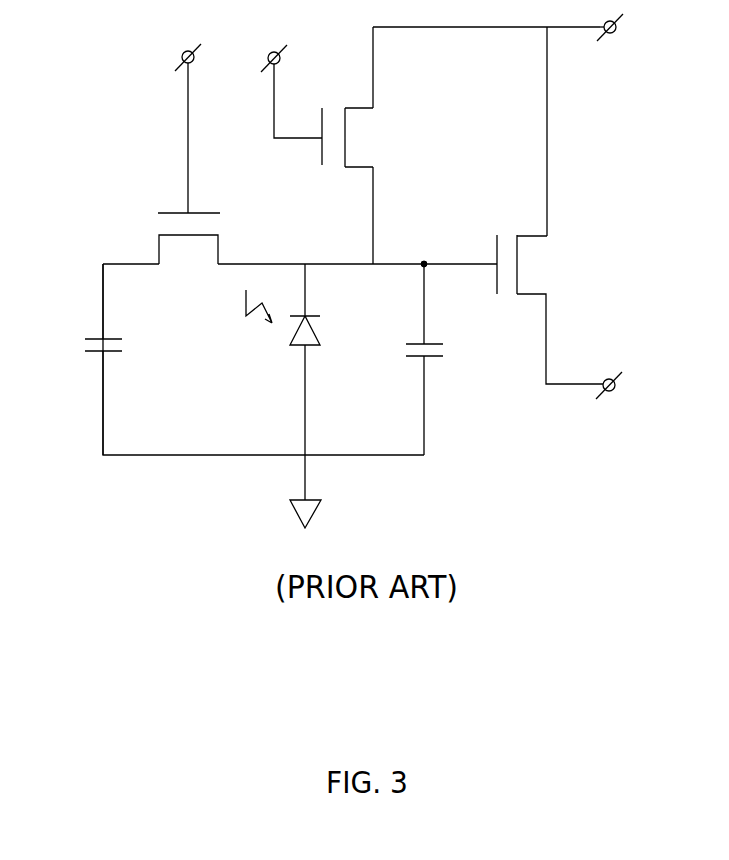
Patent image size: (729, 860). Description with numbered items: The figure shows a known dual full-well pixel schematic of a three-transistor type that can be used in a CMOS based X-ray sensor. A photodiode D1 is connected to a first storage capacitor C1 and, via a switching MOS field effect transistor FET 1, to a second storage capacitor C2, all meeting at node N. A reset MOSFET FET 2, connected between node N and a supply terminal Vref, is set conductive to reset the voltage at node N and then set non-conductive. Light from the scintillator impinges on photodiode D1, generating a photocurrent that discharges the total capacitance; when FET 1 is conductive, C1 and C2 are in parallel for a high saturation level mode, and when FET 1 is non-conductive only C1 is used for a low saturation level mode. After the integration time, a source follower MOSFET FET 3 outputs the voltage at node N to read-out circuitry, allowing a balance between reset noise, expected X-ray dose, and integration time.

The switching MOS field effect transistor FET 1 is at (150, 243).
The reset MOSFET FET 2 is at (372, 95).
The source follower MOSFET FET 3 is at (523, 245).
The node N is at (424, 264).
The first storage capacitor C1 is at (440, 359).
The second storage capacitor C2 is at (119, 359).
The photodiode D1 is at (301, 359).
The reference voltage terminal Vref is at (640, 29).